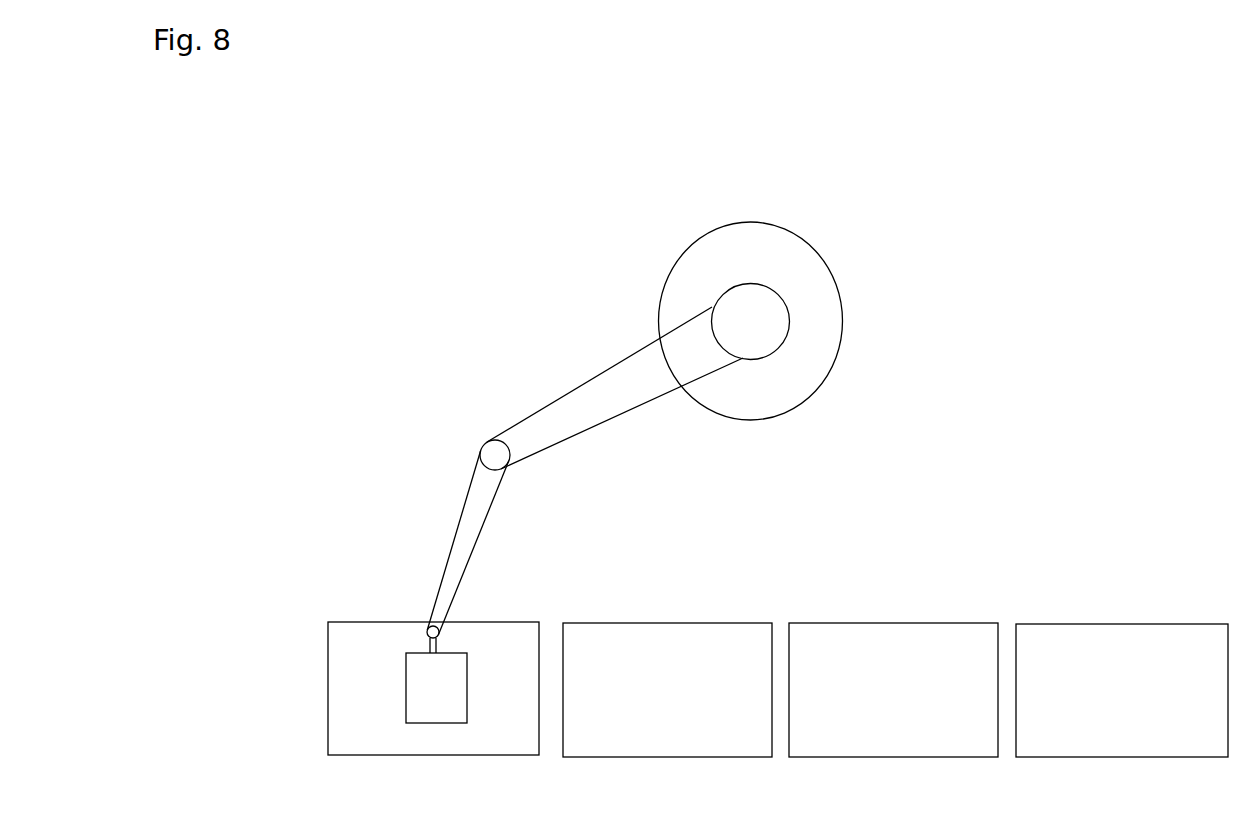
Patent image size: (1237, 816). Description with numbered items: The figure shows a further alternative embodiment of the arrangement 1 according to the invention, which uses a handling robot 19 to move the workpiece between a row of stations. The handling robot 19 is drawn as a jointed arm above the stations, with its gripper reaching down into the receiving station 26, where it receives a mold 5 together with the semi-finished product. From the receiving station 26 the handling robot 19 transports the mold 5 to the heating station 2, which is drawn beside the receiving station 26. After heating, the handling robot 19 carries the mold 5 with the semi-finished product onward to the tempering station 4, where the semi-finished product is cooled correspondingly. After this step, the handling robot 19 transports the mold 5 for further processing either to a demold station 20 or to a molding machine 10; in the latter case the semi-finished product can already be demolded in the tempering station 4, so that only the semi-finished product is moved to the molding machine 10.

The robot system 1 is at (366, 254).
The handling robot 19 is at (556, 355).
The receiving station 26 is at (359, 697).
The mold 5 is at (446, 703).
The heating station 2 is at (675, 704).
The tempering station 4 is at (900, 704).
The molding machine 10 is at (1083, 704).
The demold station 20 is at (1199, 704).